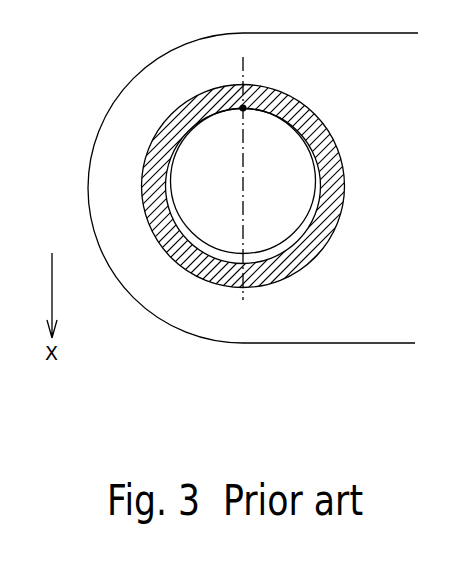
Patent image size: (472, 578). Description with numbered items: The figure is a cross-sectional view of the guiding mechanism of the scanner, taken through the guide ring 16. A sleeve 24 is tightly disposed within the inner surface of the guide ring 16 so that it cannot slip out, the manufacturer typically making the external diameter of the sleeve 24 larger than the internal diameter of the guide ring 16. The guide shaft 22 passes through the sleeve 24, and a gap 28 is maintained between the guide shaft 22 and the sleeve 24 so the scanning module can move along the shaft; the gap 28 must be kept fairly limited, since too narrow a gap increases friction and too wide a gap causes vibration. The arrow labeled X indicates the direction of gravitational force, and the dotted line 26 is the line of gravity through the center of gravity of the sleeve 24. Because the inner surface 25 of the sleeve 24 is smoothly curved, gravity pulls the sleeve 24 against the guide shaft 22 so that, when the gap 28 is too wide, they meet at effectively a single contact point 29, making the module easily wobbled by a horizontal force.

The guide ring 16 is at (128, 118).
The guide shaft 22 is at (288, 203).
The sleeve 24 is at (297, 101).
The inner surface 25 is at (168, 201).
The dotted line 26 is at (243, 62).
The gap 28 is at (292, 243).
The contact point 29 is at (242, 108).